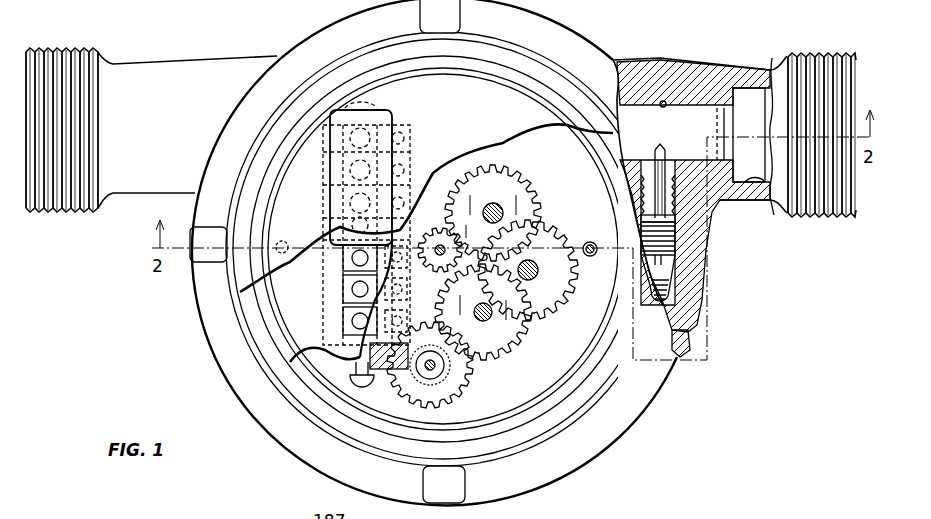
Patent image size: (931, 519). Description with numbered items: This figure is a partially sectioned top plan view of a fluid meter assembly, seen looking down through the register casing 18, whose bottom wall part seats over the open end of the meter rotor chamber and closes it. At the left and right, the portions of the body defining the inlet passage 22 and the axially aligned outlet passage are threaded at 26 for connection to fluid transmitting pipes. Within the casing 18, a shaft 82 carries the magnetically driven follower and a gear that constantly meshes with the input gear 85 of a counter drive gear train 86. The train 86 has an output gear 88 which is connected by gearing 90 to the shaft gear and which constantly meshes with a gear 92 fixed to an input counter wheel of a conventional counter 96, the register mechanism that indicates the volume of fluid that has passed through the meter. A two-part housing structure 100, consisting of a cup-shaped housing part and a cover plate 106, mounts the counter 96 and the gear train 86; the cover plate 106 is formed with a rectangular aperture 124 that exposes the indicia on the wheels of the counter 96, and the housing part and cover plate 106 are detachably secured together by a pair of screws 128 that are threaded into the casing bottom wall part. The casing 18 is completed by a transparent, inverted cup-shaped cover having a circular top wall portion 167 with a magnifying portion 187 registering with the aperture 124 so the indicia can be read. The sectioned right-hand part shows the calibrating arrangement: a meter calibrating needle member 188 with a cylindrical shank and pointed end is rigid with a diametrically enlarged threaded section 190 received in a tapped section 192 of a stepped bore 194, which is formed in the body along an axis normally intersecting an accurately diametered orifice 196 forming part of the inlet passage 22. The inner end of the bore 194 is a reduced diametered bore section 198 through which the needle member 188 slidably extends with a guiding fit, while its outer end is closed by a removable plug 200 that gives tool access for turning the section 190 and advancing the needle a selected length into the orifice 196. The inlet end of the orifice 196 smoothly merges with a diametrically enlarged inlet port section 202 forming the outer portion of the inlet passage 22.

The register casing 18 is at (236, 290).
The inlet passage 22 is at (751, 98).
The threads 26 is at (73, 50).
The shaft 82 is at (440, 239).
The input gear 85 is at (520, 178).
The counter drive gear train 86 is at (554, 192).
The output gear 88 is at (448, 376).
The gearing 90 is at (516, 346).
The gear 92 is at (343, 325).
The counter 96 is at (412, 140).
The housing structure 100 is at (258, 330).
The cover plate 106 is at (278, 350).
The rectangular aperture 124 is at (343, 285).
The screws 128 is at (590, 258).
The top wall portion 167 is at (482, 137).
The magnifying portion 187 is at (388, 120).
The meter calibrating needle member 188 is at (663, 170).
The threaded section 190 is at (668, 243).
The tapped section 192 is at (648, 205).
The stepped bore 194 is at (676, 212).
The orifice 196 is at (665, 102).
The reduced diametered bore section 198 is at (661, 155).
The plug 200 is at (691, 350).
The inlet port section 202 is at (760, 188).